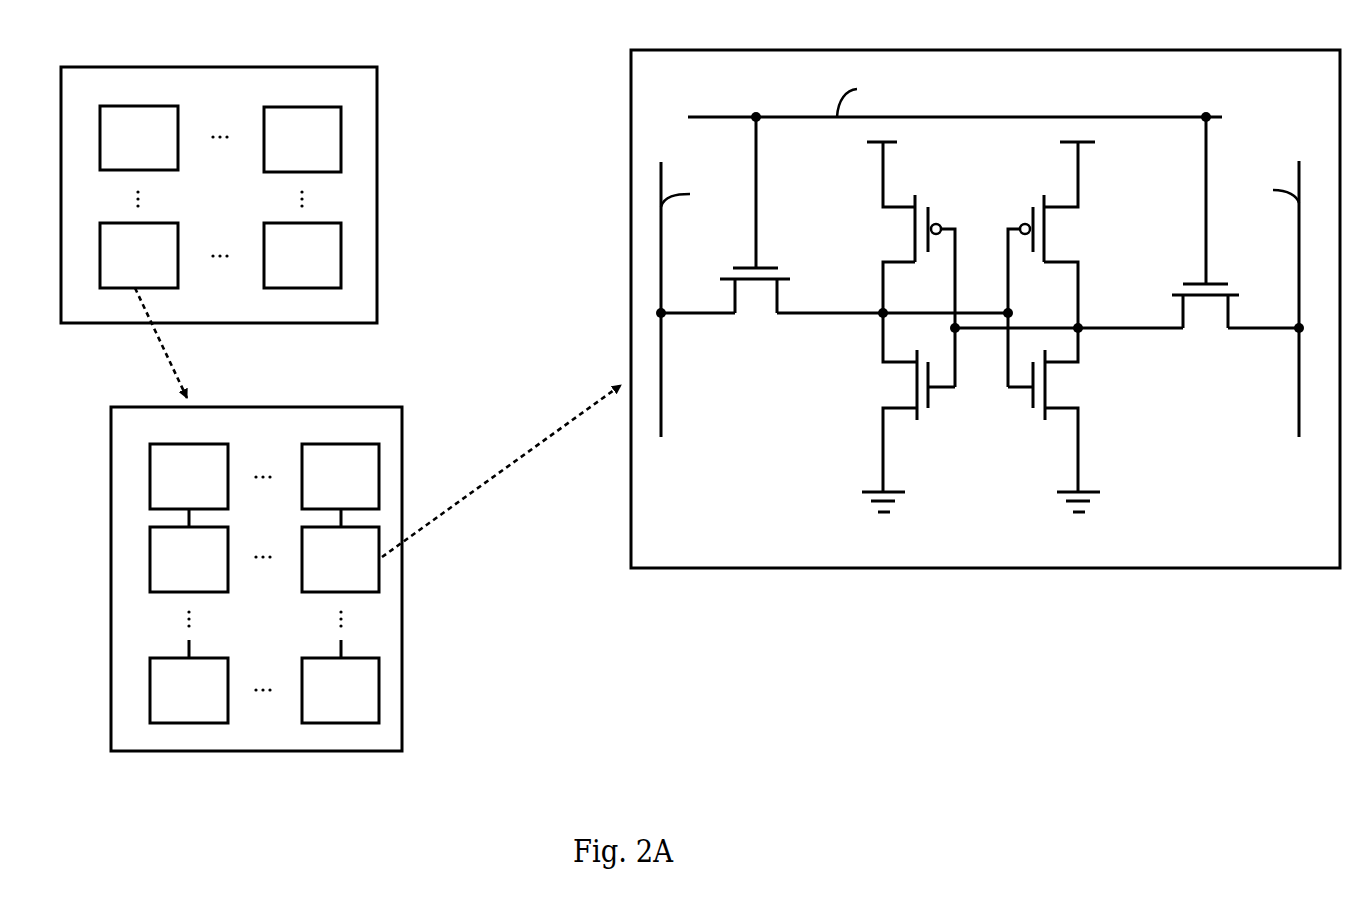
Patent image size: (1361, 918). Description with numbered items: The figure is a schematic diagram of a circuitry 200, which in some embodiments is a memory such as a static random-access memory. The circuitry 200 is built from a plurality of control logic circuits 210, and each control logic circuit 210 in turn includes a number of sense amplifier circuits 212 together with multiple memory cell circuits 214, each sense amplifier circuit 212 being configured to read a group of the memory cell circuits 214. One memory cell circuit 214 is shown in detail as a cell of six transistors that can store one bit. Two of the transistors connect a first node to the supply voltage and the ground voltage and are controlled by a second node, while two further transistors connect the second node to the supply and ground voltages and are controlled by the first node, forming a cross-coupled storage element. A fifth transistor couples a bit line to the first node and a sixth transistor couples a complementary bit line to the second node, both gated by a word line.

The circuitry 200 is at (242, 67).
The control logic circuit 210 is at (321, 266).
The sense amplifier circuit 212 is at (359, 488).
The memory cell circuit 214 is at (359, 702).